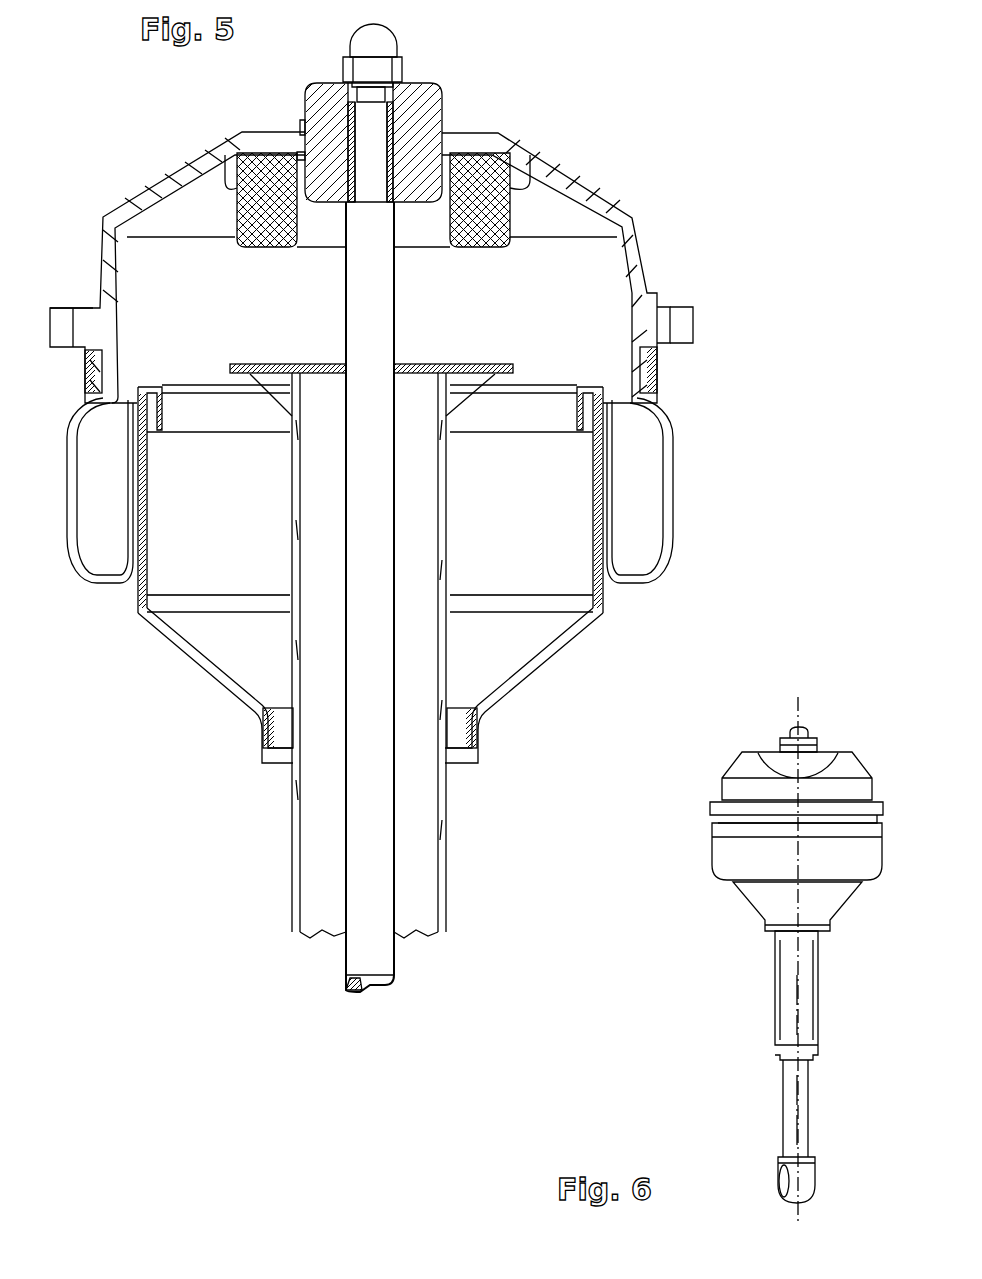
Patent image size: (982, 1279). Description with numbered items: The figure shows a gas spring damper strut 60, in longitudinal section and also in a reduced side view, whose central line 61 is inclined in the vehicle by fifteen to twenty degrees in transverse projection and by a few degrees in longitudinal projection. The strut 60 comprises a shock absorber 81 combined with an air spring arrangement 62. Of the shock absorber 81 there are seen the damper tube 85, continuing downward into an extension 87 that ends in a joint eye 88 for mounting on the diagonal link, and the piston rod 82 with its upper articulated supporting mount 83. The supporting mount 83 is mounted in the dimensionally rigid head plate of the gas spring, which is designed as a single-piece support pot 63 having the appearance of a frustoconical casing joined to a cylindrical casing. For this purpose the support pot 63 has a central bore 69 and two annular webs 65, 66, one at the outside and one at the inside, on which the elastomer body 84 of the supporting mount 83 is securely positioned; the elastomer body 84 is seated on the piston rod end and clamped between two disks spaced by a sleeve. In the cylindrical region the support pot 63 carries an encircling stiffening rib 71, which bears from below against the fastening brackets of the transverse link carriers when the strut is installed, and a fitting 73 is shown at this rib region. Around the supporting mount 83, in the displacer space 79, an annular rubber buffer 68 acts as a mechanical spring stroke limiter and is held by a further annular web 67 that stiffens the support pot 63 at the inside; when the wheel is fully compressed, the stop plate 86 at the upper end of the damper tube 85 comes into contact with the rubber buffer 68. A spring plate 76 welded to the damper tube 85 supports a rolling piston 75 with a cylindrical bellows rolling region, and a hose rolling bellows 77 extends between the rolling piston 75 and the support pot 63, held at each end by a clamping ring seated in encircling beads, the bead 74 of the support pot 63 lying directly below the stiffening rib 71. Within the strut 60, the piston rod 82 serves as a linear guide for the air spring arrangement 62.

In FIG. 6, the gas spring damper strut 60 is at (760, 940).
In FIG. 5, the central line 61 is at (370, 818).
In FIG. 6, the central line 61 is at (803, 990).
In FIG. 6, the air spring arrangement 62 is at (720, 887).
In FIG. 5, the support pot 63 is at (637, 255).
In FIG. 5, the outer annular web 65 is at (305, 128).
In FIG. 5, the inner annular web 66 is at (307, 157).
In FIG. 5, the further annular web 67 is at (233, 178).
In FIG. 5, the rubber buffer 68 is at (492, 202).
In FIG. 5, the central bore 69 is at (402, 143).
In FIG. 5, the stiffening rib 71 is at (660, 313).
In FIG. 5, the fitting 73 is at (682, 333).
In FIG. 5, the bead 74 is at (640, 368).
In FIG. 5, the rolling piston 75 is at (597, 508).
In FIG. 5, the spring plate 76 is at (265, 757).
In FIG. 5, the hose rolling bellows 77 is at (666, 540).
In FIG. 5, the displacer space 79 is at (550, 485).
In FIG. 6, the shock absorber 81 is at (770, 988).
In FIG. 5, the piston rod 82 is at (355, 965).
In FIG. 5, the supporting mount 83 is at (455, 122).
In FIG. 5, the elastomer body 84 is at (430, 117).
In FIG. 5, the damper tube 85 is at (300, 880).
In FIG. 6, the damper tube 85 is at (785, 1020).
In FIG. 5, the stop plate 86 is at (503, 368).
In FIG. 6, the extension 87 is at (790, 1108).
In FIG. 6, the joint eye 88 is at (780, 1170).